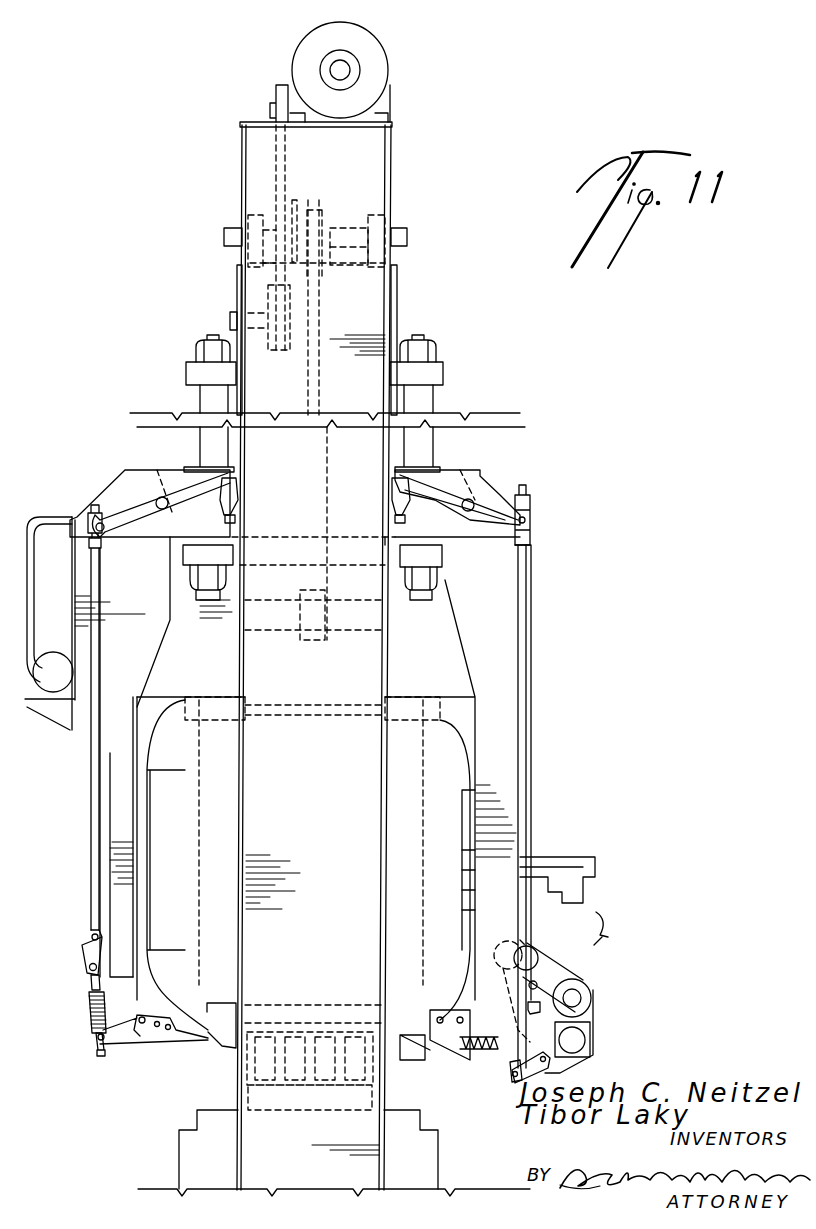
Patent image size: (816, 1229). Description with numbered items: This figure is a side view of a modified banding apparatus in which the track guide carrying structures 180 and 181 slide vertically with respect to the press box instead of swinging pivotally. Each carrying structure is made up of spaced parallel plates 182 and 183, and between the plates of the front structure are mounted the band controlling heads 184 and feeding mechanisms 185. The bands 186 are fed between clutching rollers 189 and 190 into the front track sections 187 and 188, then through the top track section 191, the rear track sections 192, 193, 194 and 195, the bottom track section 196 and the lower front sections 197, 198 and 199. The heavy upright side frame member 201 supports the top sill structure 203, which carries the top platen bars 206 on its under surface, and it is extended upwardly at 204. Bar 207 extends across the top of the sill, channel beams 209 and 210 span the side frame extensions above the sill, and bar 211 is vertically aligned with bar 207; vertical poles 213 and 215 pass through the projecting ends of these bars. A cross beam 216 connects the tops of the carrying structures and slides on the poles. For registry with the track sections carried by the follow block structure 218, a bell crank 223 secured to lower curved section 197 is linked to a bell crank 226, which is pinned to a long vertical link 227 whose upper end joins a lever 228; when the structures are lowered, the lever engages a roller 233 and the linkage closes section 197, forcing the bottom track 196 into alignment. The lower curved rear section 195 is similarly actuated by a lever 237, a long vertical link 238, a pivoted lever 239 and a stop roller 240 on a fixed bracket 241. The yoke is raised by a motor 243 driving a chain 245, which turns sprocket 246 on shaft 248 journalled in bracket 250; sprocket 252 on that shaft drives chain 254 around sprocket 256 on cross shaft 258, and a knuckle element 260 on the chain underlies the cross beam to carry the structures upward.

The track guide carrying structure 180 is at (535, 690).
The track guide carrying structure 181 is at (105, 793).
The parallel plate 182 is at (500, 640).
The parallel plate 183 is at (112, 819).
The band controlling head 184 is at (555, 853).
The feeding mechanism 185 is at (607, 994).
The band 186 is at (610, 918).
The front track section 187 is at (462, 840).
The front track section 188 is at (460, 740).
The clutching roller 189 is at (525, 935).
The clutching roller 190 is at (540, 950).
The top track section 191 is at (275, 722).
The rear track section 192 is at (158, 735).
The rear track section 193 is at (150, 843).
The rear track section 194 is at (150, 985).
The rear track section 195 is at (190, 1045).
The bottom track section 196 is at (280, 1020).
The lower front section 197 is at (435, 1045).
The lower front section 198 is at (372, 312).
The lower front section 199 is at (445, 700).
The upright side frame member 201 is at (332, 818).
The top sill structure 203 is at (395, 645).
The side frame extension 204 is at (368, 402).
The top platen bar 206 is at (325, 735).
The bar 207 is at (445, 558).
The channel beam 209 is at (398, 323).
The channel beam 210 is at (236, 280).
The bar 211 is at (440, 374).
The vertical pole 213 is at (436, 400).
The vertical pole 215 is at (200, 396).
The cross beam 216 is at (125, 480).
The follow block structure 218 is at (220, 1000).
The bell crank 223 is at (450, 1060).
The bell crank 226 is at (510, 1085).
The long vertical link 227 is at (530, 750).
The lever 228 is at (505, 500).
The roller 233 is at (430, 485).
The lever 237 is at (125, 1052).
The long vertical link 238 is at (90, 880).
The pivoted lever 239 is at (133, 540).
The stop roller 240 is at (240, 480).
The fixed bracket 241 is at (285, 215).
The motor 243 is at (388, 68).
The chain 245 is at (288, 158).
The sprocket 246 is at (255, 215).
The shaft 248 is at (350, 230).
The bracket 250 is at (240, 215).
The sprocket 252 is at (312, 213).
The chain 254 is at (322, 300).
The sprocket 256 is at (328, 600).
The cross shaft 258 is at (300, 640).
The knuckle element 260 is at (335, 525).